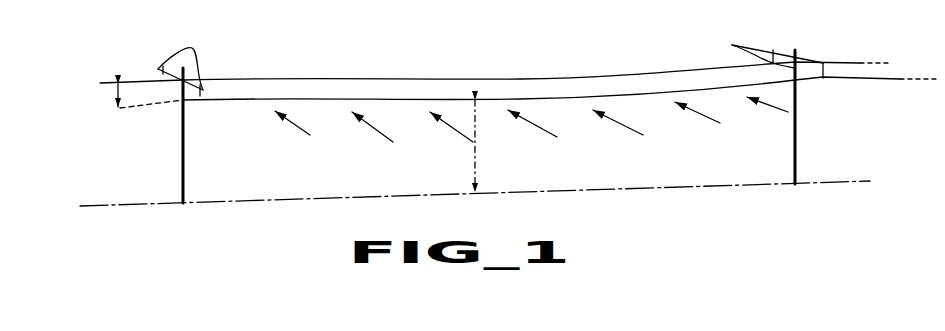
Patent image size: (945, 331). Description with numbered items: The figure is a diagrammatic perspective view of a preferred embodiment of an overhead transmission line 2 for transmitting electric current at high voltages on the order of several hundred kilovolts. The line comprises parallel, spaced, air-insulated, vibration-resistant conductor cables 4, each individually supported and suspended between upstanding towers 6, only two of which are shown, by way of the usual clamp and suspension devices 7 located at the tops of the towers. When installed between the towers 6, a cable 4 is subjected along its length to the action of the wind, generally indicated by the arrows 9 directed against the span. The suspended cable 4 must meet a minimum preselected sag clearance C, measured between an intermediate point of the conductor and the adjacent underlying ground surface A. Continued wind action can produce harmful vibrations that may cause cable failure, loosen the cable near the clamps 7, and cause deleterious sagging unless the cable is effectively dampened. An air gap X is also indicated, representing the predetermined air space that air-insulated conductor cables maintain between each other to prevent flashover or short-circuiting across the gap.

The overhead transmission line 2 is at (518, 72).
The conductor cable 4 is at (316, 96).
The upstanding tower 6 is at (181, 153).
The clamp and suspension device 7 is at (192, 48).
The arrows indicating wind action 9 is at (613, 120).
The sag clearance C is at (470, 158).
The ground surface A is at (640, 197).
The air gap X is at (128, 95).